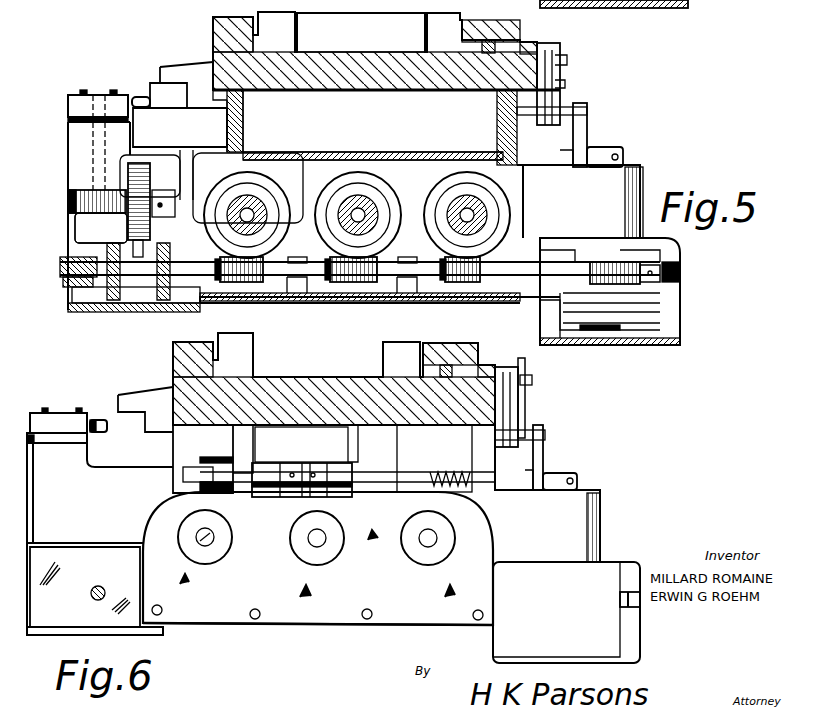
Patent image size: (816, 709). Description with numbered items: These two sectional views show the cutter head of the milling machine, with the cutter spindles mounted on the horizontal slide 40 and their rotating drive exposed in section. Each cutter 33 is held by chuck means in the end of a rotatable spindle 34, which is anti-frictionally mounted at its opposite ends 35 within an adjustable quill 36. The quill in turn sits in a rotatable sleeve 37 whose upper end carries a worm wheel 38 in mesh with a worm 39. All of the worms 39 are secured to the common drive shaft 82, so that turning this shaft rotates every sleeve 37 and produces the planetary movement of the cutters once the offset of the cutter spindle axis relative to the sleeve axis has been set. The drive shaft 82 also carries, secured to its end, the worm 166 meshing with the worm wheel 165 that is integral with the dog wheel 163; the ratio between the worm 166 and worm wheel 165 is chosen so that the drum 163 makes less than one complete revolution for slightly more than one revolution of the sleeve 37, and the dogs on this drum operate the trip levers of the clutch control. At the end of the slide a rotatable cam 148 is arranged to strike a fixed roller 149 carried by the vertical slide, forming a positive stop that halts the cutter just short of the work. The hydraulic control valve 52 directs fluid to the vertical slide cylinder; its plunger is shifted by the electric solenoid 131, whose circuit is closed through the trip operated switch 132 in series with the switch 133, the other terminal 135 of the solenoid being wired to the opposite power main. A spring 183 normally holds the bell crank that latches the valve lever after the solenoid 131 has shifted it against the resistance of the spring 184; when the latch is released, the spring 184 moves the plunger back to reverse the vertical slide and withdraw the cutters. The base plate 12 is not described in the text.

In FIG. 5, the base plate 12 is at (205, 60).
In FIG. 6, the base plate 12 is at (172, 385).
In FIG. 5, the cutter 33 is at (70, 303).
In FIG. 5, the rotatable spindle 34 is at (134, 303).
In FIG. 5, the opposite ends 35 is at (104, 303).
In FIG. 5, the adjustable quill 36 is at (163, 303).
In FIG. 5, the rotatable sleeve 37 is at (276, 186).
In FIG. 5, the worm wheel 38 is at (320, 258).
In FIG. 5, the worm 39 is at (452, 285).
In FIG. 5, the horizontal slide 40 is at (470, 300).
In FIG. 6, the horizontal slide 40 is at (392, 630).
In FIG. 6, the control valve 52 is at (268, 497).
In FIG. 5, the shaft 82 is at (318, 277).
In FIG. 5, the electric solenoid 131 is at (68, 175).
In FIG. 6, the electric solenoid 131 is at (318, 558).
In FIG. 5, the trip operated switch 132 is at (68, 202).
In FIG. 5, the switch 133 is at (68, 230).
In FIG. 5, the terminal 135 is at (101, 228).
In FIG. 5, the rotatable cam 148 is at (68, 104).
In FIG. 6, the rotatable cam 148 is at (50, 413).
In FIG. 5, the fixed roller 149 is at (141, 96).
In FIG. 6, the fixed roller 149 is at (97, 420).
In FIG. 5, the dog wheel 163 is at (656, 10).
In FIG. 5, the worm wheel 165 is at (572, 248).
In FIG. 5, the worm 166 is at (655, 262).
In FIG. 6, the spring 183 is at (355, 482).
In FIG. 6, the spring 184 is at (436, 492).